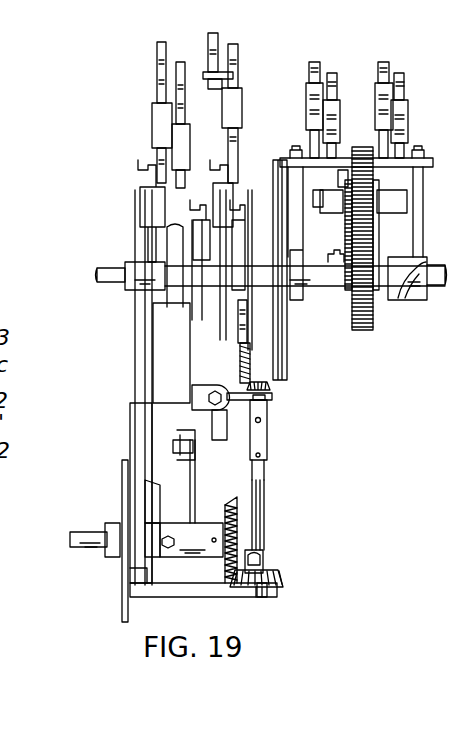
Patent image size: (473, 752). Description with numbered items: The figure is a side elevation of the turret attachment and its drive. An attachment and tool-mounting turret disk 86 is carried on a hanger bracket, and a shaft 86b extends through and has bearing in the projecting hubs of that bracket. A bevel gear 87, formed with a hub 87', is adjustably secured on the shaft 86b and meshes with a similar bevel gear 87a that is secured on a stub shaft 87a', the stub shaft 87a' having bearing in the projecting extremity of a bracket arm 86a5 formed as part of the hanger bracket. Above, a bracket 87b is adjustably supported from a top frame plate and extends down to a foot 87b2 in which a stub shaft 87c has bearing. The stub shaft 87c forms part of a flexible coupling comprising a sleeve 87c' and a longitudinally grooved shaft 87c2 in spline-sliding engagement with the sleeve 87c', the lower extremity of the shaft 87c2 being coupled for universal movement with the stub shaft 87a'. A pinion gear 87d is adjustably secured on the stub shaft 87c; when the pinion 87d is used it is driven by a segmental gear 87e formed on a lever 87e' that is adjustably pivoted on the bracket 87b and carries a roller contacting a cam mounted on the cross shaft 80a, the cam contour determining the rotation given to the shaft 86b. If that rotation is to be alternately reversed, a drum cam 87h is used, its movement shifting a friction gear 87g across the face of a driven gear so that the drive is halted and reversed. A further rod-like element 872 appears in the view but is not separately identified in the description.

The cross shaft 80a is at (100, 274).
The attachment and tool-mounting turret disk 86 is at (120, 609).
The shaft 86b is at (70, 547).
The bracket arm 86a5 is at (271, 602).
The bevel gear 87 is at (275, 540).
The hub 87' is at (191, 555).
The bevel gear 87a is at (282, 558).
The stub shaft 87a' is at (301, 580).
The bracket 87b is at (191, 186).
The foot 87b2 is at (267, 398).
The stub shaft 87c is at (298, 427).
The sleeve 87c' is at (301, 461).
The longitudinally grooved shaft 87c2 is at (263, 487).
The pinion gear 87d is at (300, 383).
The segmental gear 87e is at (291, 363).
The lever 87e' is at (297, 361).
The friction gear 87g is at (287, 316).
The drum cam 87h is at (415, 300).
The rod 872 is at (257, 258).